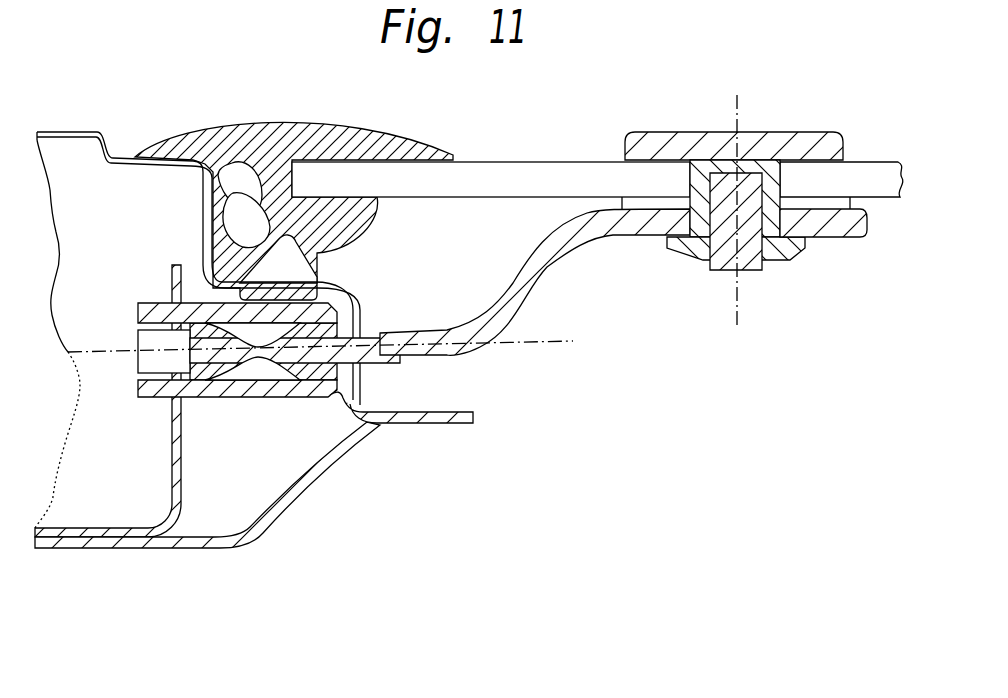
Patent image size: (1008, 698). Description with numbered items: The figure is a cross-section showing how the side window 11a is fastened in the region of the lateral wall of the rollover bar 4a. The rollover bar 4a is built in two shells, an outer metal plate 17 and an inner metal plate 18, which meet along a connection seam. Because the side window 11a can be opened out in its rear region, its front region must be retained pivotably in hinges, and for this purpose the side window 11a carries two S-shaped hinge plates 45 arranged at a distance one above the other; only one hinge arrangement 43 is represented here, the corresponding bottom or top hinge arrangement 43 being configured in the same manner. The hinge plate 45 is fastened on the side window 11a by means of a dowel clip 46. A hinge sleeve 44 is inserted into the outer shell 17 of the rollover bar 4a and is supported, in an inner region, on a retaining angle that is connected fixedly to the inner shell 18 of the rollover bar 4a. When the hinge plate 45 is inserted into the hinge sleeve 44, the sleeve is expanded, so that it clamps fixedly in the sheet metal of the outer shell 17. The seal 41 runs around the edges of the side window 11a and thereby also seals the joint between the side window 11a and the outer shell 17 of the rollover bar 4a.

The outer metal plate 17 is at (72, 132).
The rollover bar 4a is at (107, 193).
The seal 41 is at (290, 128).
The side window 11a is at (533, 178).
The dowel clip 46 is at (783, 147).
The hinge plate 45 is at (533, 275).
The hinge arrangement 43 is at (497, 374).
The hinge sleeve 44 is at (258, 385).
The inner metal plate 18 is at (203, 546).